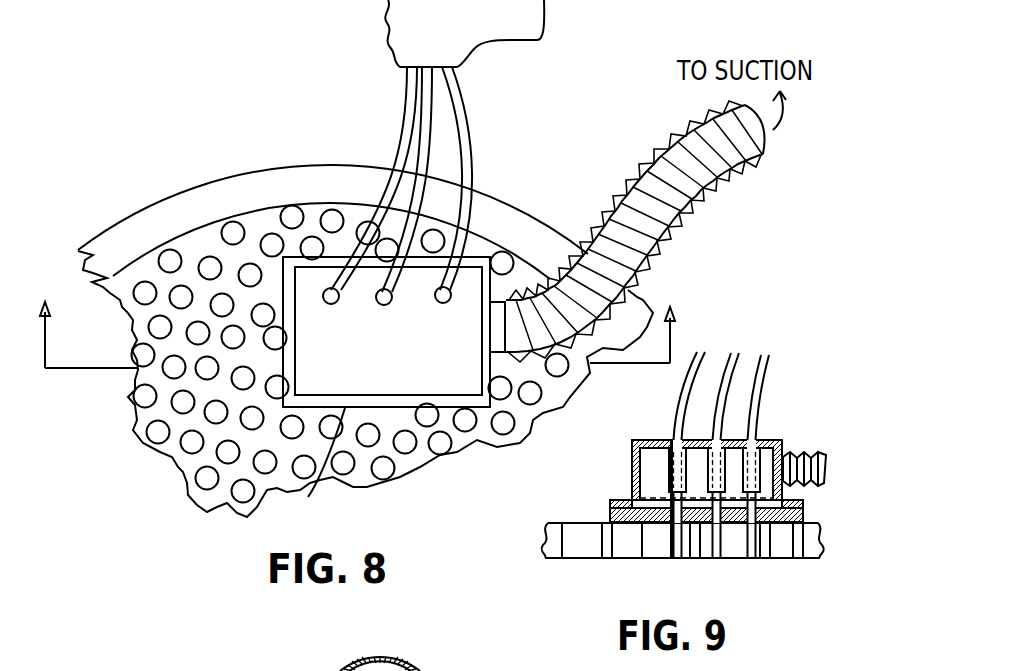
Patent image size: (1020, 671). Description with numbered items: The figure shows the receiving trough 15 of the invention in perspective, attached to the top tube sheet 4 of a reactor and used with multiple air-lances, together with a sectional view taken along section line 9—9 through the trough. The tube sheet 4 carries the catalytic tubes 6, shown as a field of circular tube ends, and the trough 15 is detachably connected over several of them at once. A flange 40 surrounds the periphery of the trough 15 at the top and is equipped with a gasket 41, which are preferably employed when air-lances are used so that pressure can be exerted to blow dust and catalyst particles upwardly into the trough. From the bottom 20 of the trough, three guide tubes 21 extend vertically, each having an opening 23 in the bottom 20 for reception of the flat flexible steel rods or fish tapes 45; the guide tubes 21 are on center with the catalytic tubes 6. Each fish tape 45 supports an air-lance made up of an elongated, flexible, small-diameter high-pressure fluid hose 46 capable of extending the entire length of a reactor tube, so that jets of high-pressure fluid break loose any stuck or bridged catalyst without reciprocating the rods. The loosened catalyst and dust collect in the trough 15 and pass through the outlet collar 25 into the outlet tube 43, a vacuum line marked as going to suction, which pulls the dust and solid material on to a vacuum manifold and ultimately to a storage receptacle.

In FIG. 8, the tube sheet 4 is at (540, 413).
In FIG. 9, the tube sheet 4 is at (588, 530).
In FIG. 8, the catalytic tubes 6 is at (517, 441).
In FIG. 9, the catalytic tubes 6 is at (647, 560).
In FIG. 8, the section line 9— 9 is at (355, 314).
In FIG. 8, the receiving trough 15 is at (457, 305).
In FIG. 9, the receiving trough 15 is at (620, 458).
In FIG. 8, the bottom 20 is at (441, 385).
In FIG. 9, the bottom 20 is at (680, 440).
In FIG. 9, the guide tubes 21 is at (663, 463).
In FIG. 8, the openings 23 is at (330, 304).
In FIG. 9, the outlet collar 25 is at (797, 432).
In FIG. 8, the flange 40 is at (306, 468).
In FIG. 9, the flange 40 is at (632, 503).
In FIG. 9, the gasket 41 is at (803, 518).
In FIG. 8, the outlet tube 43 is at (664, 230).
In FIG. 9, the outlet tube 43 is at (817, 453).
In FIG. 8, the fish tapes 45 is at (470, 118).
In FIG. 9, the fish tapes 45 is at (762, 405).
In FIG. 8, the high-pressure fluid hose 46 is at (384, 195).